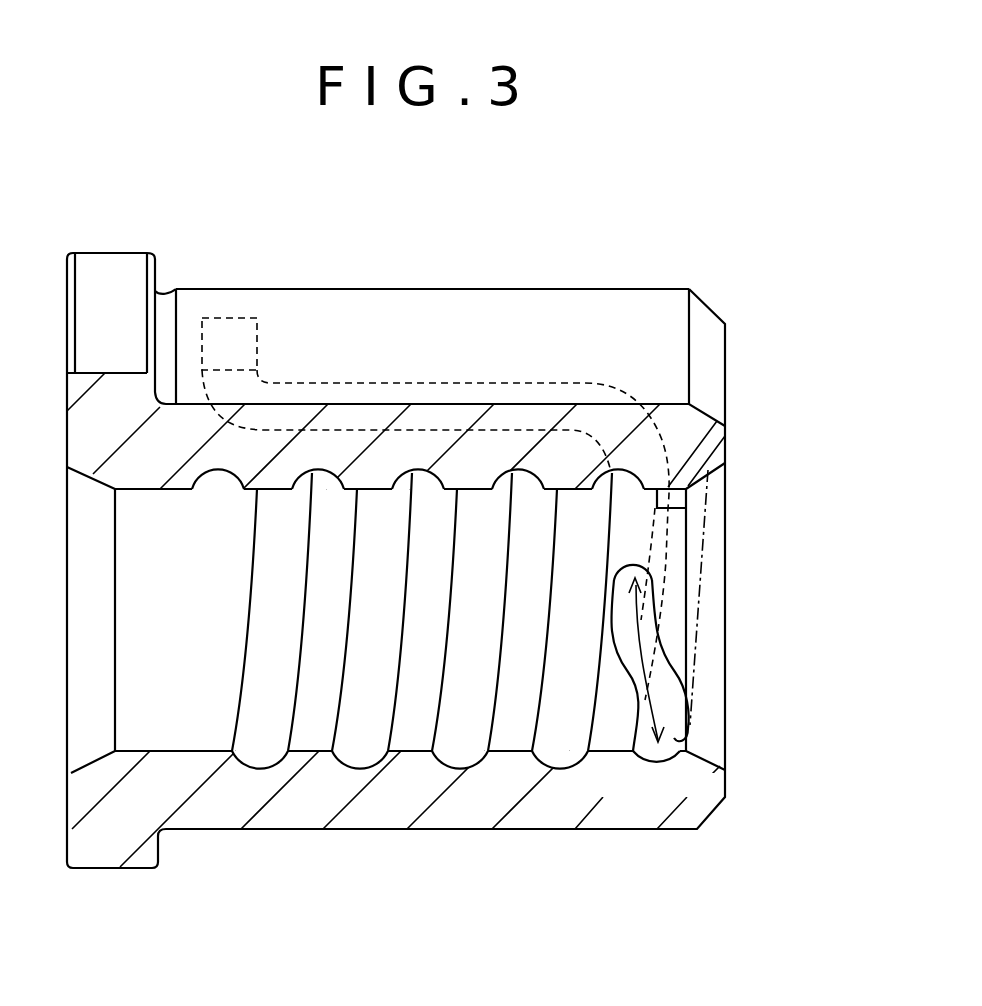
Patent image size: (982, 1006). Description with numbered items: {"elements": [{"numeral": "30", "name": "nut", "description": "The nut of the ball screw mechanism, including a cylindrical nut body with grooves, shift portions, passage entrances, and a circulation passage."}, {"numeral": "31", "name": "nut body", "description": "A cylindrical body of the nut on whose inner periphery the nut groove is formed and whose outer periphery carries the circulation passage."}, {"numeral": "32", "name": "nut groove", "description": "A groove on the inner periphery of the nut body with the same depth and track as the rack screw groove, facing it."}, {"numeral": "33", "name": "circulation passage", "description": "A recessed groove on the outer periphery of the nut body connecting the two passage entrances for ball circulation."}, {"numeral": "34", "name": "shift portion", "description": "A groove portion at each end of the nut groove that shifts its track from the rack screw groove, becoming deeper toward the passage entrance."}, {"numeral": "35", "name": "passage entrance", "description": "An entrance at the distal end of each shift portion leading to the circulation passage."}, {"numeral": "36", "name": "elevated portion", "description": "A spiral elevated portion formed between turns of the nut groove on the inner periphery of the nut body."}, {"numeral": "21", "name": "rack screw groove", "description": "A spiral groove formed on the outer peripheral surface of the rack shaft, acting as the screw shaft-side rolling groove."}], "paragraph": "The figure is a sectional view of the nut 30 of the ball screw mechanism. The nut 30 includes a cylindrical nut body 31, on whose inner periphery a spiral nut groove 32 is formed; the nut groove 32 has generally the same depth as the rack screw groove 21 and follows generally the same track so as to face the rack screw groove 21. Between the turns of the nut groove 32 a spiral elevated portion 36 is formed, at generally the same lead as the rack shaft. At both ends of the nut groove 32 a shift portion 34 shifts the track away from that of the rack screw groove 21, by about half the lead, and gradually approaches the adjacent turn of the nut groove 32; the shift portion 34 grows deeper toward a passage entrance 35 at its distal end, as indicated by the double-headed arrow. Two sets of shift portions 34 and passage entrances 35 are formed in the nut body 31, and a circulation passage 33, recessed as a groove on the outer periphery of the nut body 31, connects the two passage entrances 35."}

The nut member 30 is at (770, 296).
The outer peripheral surface 31 is at (668, 293).
The thread groove 32 is at (388, 732).
The hidden thread groove portion 33 is at (372, 396).
The variable-depth groove portion 34 is at (681, 654).
The groove end portion 35 is at (235, 318).
The inner peripheral surface 36 is at (302, 737).
The axis line 21 is at (687, 507).